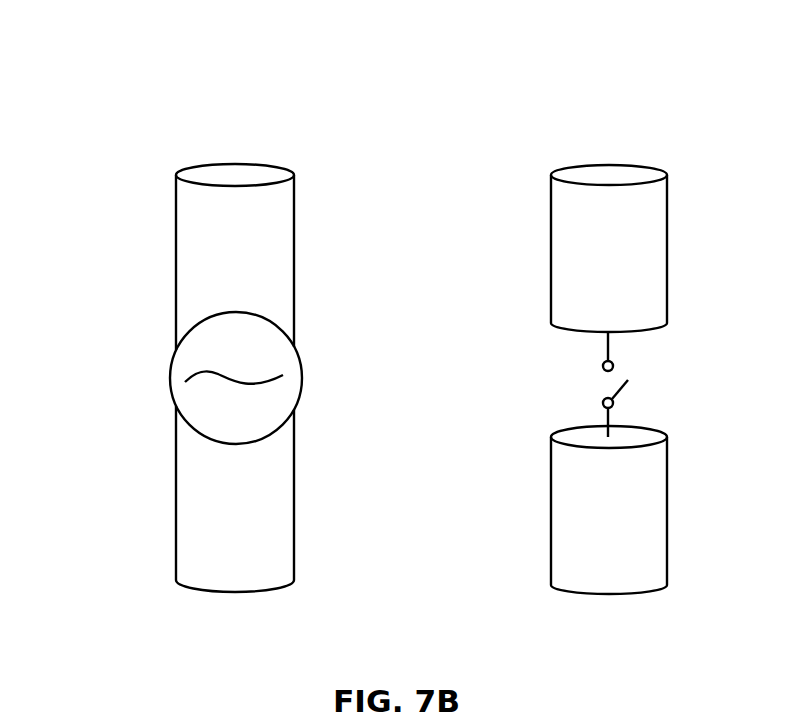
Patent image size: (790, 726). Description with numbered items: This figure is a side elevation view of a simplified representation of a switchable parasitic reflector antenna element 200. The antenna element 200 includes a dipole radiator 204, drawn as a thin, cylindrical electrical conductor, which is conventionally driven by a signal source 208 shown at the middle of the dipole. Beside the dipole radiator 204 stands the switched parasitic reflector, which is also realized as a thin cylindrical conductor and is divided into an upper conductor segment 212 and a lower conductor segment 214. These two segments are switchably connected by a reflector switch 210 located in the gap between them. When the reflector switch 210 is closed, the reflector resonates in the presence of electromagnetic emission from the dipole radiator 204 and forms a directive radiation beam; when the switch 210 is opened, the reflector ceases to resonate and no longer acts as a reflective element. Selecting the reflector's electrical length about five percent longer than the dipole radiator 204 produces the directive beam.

The switchable parasitic reflector antenna element 200 is at (410, 339).
The dipole radiator 204 is at (132, 586).
The signal source 208 is at (295, 342).
The reflector switch 210 is at (628, 381).
The upper conductor segment 212 is at (667, 256).
The lower conductor segment 214 is at (667, 483).